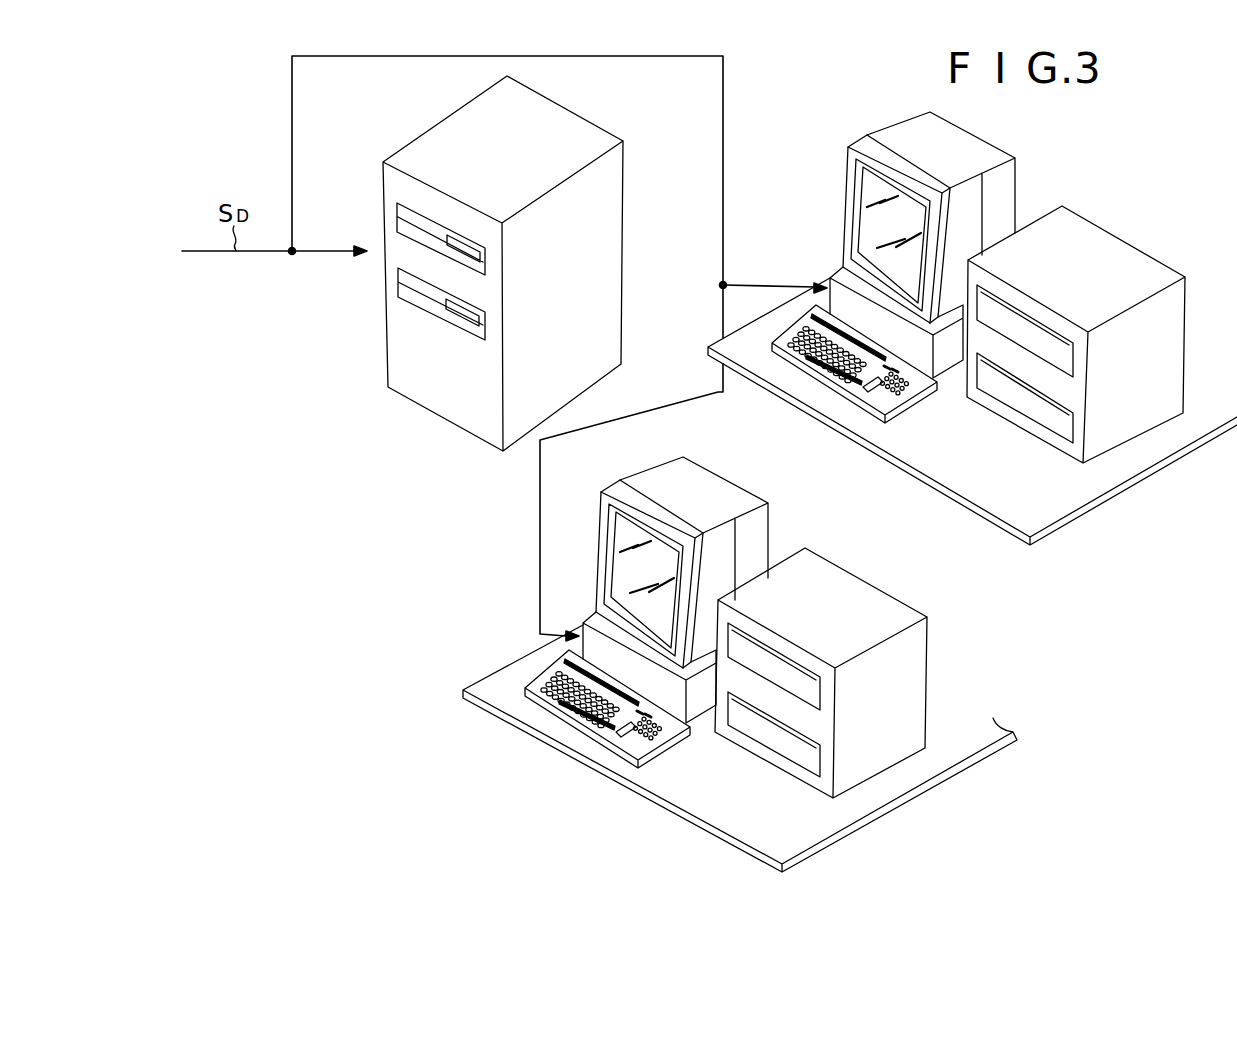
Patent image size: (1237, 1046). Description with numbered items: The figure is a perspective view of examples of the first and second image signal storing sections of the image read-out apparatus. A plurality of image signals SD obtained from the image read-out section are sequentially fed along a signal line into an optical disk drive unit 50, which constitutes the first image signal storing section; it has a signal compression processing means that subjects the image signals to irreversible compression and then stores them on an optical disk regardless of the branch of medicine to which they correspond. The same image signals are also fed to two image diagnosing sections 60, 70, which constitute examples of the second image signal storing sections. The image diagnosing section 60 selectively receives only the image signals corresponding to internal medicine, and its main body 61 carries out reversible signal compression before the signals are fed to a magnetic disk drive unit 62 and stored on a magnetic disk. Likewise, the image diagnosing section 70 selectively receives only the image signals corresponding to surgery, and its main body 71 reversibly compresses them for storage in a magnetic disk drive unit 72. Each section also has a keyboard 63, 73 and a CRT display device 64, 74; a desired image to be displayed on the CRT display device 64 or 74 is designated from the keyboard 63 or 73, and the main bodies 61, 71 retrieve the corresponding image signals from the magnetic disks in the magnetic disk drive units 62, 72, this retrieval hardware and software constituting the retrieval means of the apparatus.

The optical disk drive unit 50 is at (610, 178).
The image diagnosing section 60 is at (1045, 170).
The main body 61 is at (843, 298).
The magnetic disk drive unit 62 is at (1147, 262).
The keyboard 63 is at (785, 344).
The CRT display device 64 is at (867, 150).
The image diagnosing section 70 is at (833, 523).
The main body 71 is at (600, 642).
The magnetic disk drive unit 72 is at (880, 613).
The keyboard 73 is at (540, 690).
The CRT display device 74 is at (618, 493).